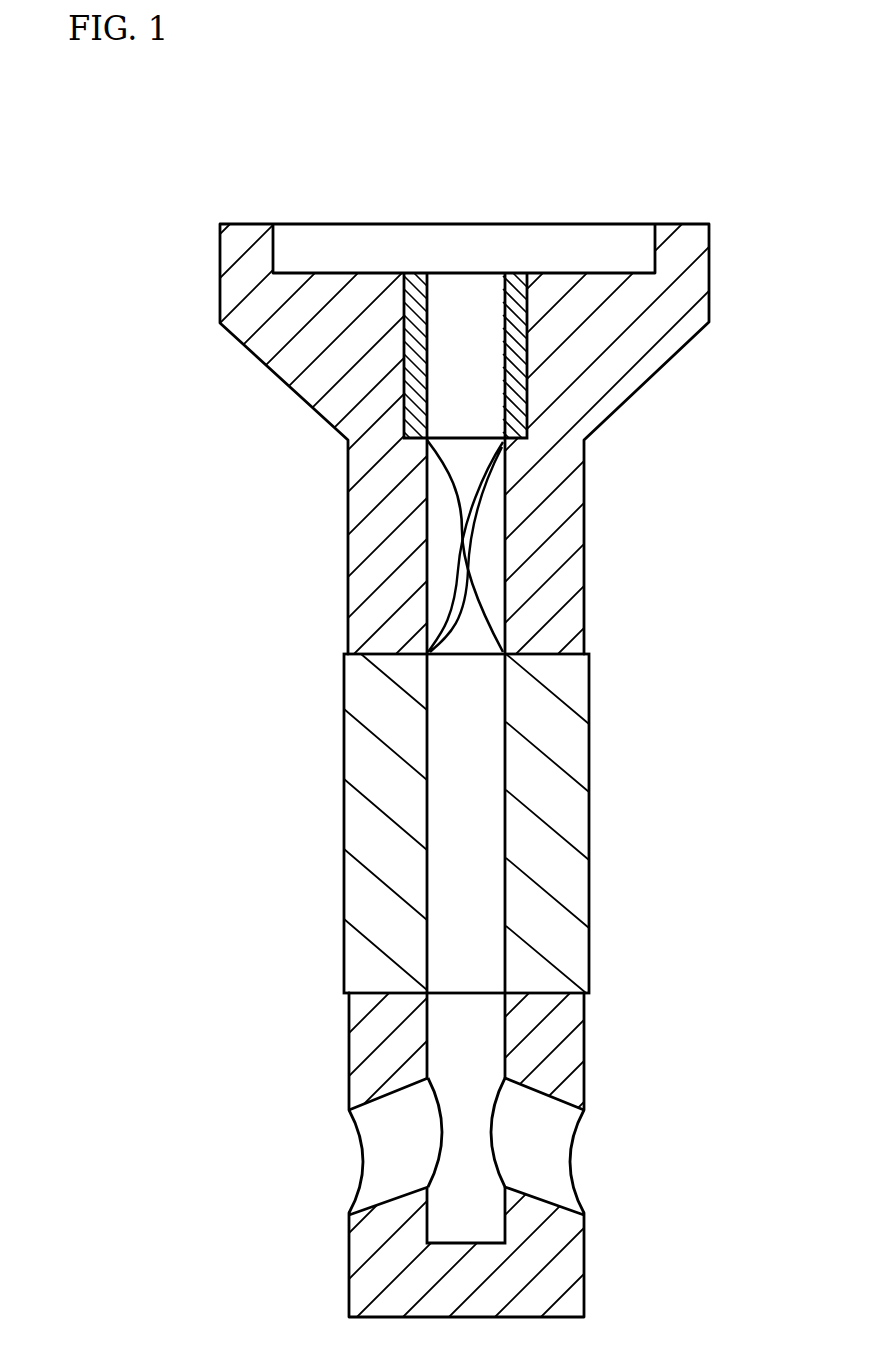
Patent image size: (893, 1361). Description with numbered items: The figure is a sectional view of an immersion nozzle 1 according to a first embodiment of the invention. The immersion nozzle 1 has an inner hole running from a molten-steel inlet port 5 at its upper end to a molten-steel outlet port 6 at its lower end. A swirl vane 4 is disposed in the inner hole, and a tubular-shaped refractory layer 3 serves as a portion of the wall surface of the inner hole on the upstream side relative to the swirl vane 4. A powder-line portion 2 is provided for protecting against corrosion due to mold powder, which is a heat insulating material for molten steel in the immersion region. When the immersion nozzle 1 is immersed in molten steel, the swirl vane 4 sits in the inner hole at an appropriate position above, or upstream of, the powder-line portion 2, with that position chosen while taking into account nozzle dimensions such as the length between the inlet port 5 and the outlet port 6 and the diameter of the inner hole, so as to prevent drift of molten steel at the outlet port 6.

The immersion nozzle 1 is at (483, 710).
The powder-line portion 2 is at (575, 798).
The tubular-shaped refractory layer 3 is at (515, 390).
The swirl vane 4 is at (458, 465).
The molten-steel inlet port 5 is at (460, 315).
The molten-steel outlet port 6 is at (380, 1143).